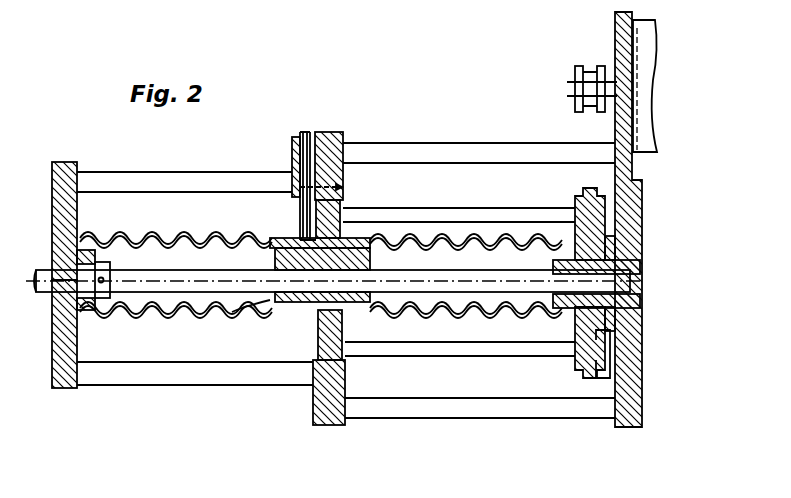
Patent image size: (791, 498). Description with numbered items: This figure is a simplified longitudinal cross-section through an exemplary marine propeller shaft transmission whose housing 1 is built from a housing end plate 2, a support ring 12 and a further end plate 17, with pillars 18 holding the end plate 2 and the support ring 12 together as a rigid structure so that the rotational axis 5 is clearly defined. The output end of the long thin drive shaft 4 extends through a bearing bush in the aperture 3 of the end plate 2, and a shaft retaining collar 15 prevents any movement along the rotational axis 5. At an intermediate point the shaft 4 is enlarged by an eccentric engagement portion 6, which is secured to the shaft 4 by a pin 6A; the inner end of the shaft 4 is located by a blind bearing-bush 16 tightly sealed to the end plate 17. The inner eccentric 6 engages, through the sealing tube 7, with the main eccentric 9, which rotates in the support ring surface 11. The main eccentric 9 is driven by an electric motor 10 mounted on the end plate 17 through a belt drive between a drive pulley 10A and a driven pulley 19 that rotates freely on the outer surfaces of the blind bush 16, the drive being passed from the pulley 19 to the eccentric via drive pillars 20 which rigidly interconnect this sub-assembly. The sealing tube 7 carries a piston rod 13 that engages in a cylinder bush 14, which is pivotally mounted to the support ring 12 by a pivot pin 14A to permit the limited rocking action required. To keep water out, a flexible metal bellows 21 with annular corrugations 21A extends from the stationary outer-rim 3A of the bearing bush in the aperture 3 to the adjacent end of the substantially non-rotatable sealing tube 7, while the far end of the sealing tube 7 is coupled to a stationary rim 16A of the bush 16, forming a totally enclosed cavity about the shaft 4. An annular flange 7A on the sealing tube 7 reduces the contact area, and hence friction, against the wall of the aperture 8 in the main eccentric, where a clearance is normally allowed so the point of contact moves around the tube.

The housing 1 is at (266, 144).
The housing end plate 2 is at (62, 170).
The aperture 3 is at (66, 388).
The stationary outer-rim of the bearing bush 3A is at (90, 250).
The drive shaft 4 is at (97, 300).
The rotational axis 5 is at (170, 300).
The eccentric engagement portion 6 is at (366, 266).
The pin 6A is at (244, 312).
The sealing tube 7 is at (276, 240).
The annular flange 7A is at (338, 304).
The aperture in the main eccentric 8 is at (372, 244).
The main eccentric 9 is at (322, 328).
The electric motor 10 is at (644, 44).
The drive pulley 10A is at (572, 82).
The support ring surface 11 is at (318, 392).
The support ring 12 is at (332, 150).
The piston rod 13 is at (312, 140).
The cylinder bush 14 is at (292, 152).
The pivot pin 14A is at (342, 187).
The shaft retaining collar 15 is at (135, 282).
The blind bearing-bush 16 is at (578, 320).
The stationary rim of the bearing bush 16A is at (556, 260).
The end plate 17 is at (632, 400).
The pillars 18 is at (118, 180).
The driven pulley 19 is at (578, 372).
The drive pillars 20 is at (478, 212).
The bellows 21 is at (150, 236).
The annular corrugations 21A is at (208, 238).